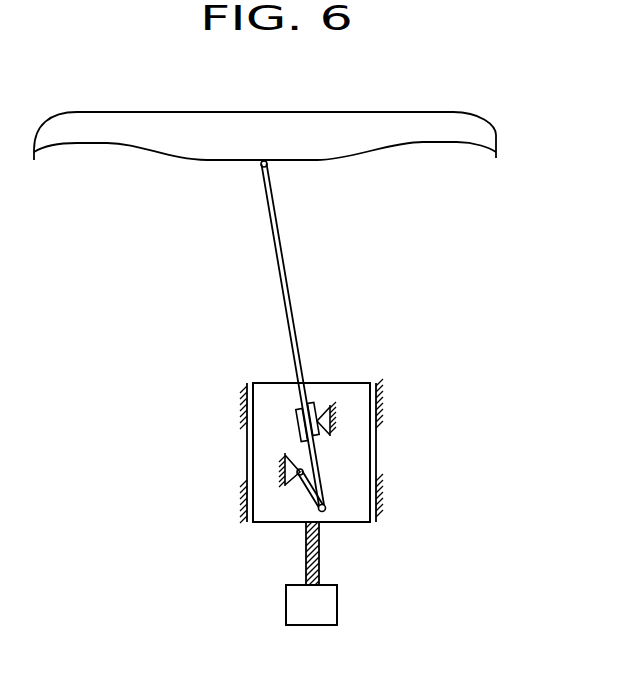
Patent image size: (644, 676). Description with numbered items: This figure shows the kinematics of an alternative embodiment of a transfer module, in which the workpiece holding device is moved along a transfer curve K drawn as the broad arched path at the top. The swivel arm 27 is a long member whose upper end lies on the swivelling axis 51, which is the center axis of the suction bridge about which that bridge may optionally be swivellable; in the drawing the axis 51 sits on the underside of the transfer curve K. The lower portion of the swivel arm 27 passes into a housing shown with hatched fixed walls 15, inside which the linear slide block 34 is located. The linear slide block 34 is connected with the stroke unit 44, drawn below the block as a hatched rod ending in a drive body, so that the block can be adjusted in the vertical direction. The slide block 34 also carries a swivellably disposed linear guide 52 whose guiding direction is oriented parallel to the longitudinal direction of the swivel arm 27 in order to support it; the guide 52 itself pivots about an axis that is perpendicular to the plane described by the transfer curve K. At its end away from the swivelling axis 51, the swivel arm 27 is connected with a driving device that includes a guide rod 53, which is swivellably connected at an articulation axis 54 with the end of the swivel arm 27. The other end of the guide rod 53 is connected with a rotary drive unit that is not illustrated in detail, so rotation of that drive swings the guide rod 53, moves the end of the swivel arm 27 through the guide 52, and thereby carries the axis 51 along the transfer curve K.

The transfer curve K is at (493, 133).
The swivelling axis 51 is at (262, 172).
The swivel arm 27 is at (285, 263).
The guide housing 15 is at (215, 409).
The linear slide block 34 is at (357, 446).
The linear guide 52 is at (322, 402).
The guide rod 53 is at (303, 483).
The articulation axis 54 is at (326, 505).
The stroke unit 44 is at (347, 578).